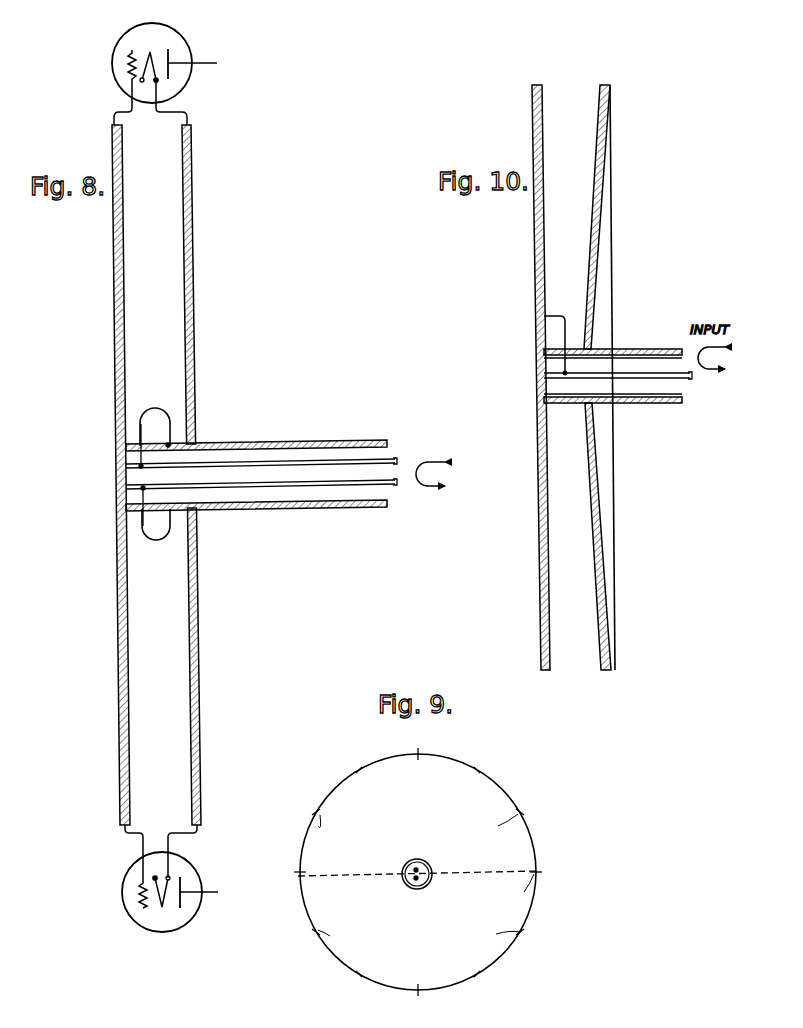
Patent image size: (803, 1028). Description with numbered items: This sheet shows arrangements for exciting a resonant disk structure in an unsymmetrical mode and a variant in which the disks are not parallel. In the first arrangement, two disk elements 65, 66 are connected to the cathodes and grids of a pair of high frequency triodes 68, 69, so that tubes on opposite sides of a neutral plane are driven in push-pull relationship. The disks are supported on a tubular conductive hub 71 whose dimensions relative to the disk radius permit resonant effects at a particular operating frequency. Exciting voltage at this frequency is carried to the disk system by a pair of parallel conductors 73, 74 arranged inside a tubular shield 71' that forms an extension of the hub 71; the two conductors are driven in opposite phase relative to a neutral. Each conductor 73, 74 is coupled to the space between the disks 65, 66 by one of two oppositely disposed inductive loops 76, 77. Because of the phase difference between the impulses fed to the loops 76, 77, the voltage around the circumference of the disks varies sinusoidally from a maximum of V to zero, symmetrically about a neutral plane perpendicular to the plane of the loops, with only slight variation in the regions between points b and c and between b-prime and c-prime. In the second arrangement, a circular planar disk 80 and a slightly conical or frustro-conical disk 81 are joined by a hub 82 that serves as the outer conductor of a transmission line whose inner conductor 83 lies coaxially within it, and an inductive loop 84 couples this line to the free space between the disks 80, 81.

In FIG. 8, the disk element 65 is at (113, 237).
In FIG. 8, the disk element 66 is at (192, 161).
In FIG. 9, the disk element 66 is at (537, 838).
In FIG. 8, the high frequency triode 68 is at (187, 41).
In FIG. 8, the high frequency triode 69 is at (128, 913).
In FIG. 8, the tubular conductive hub 71 is at (285, 460).
In FIG. 8, the tubular shield 71' is at (256, 435).
In FIG. 9, the tubular shield 71' is at (430, 866).
In FIG. 8, the parallel conductor 73 is at (394, 460).
In FIG. 9, the parallel conductor 73 is at (414, 869).
In FIG. 8, the parallel conductor 74 is at (394, 486).
In FIG. 9, the parallel conductor 74 is at (414, 879).
In FIG. 8, the inductive loop 76 is at (138, 421).
In FIG. 8, the inductive loop 77 is at (170, 529).
In FIG. 10, the circular planar disk 80 is at (542, 623).
In FIG. 10, the conical disk 81 is at (605, 621).
In FIG. 10, the hub 82 is at (565, 402).
In FIG. 10, the inner conductor 83 is at (687, 379).
In FIG. 10, the inductive loop 84 is at (545, 322).